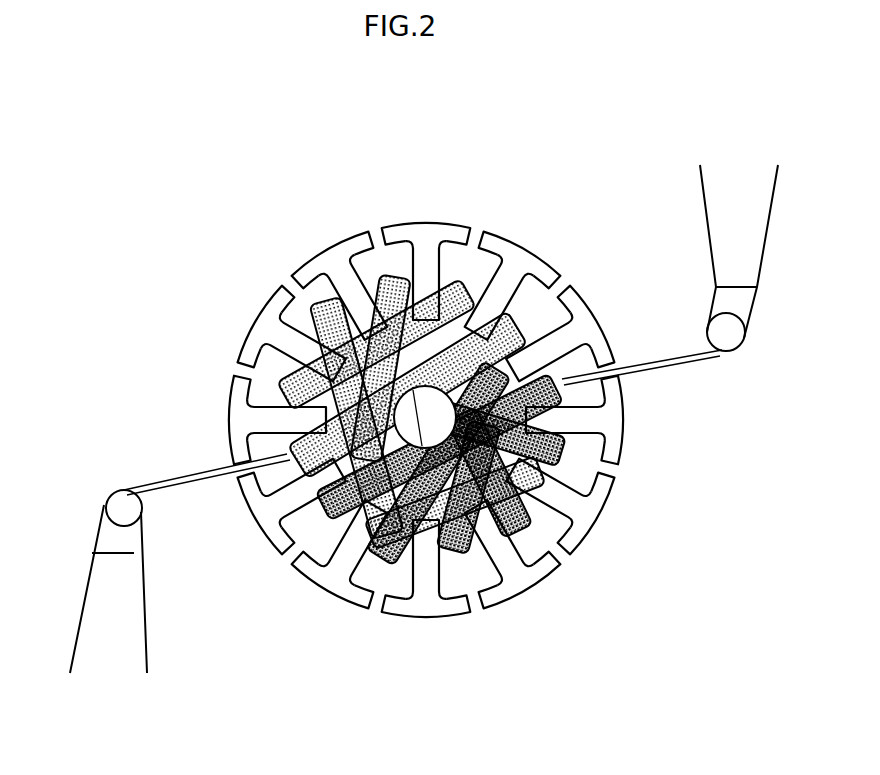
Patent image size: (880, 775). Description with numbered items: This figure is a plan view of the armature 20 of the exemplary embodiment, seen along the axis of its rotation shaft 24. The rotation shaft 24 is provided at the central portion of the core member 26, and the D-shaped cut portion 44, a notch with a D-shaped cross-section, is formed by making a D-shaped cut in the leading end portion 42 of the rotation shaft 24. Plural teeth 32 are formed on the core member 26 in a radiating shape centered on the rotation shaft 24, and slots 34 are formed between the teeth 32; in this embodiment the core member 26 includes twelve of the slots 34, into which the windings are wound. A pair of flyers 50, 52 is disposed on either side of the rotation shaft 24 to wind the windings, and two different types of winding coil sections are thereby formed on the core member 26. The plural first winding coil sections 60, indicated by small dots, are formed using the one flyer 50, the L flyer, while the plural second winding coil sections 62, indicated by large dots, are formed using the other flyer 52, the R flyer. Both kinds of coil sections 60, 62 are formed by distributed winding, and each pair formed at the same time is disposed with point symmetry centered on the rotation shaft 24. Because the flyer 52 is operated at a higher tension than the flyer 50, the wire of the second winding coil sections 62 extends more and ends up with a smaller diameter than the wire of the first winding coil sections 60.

The armature 20 is at (427, 345).
The core member 26 is at (427, 376).
The teeth 32 is at (379, 226).
The slots 34 is at (398, 255).
The rotation shaft 24 is at (366, 347).
The leading end portion 42 is at (425, 417).
The D-shaped cut portion 44 is at (408, 428).
The first winding coil sections 60 is at (435, 421).
The second winding coil sections 62 is at (572, 392).
The flyer 50 is at (164, 563).
The flyer 52 is at (681, 294).